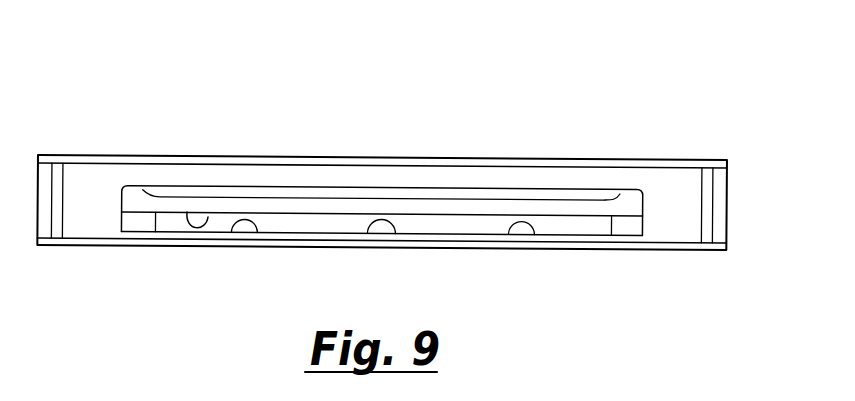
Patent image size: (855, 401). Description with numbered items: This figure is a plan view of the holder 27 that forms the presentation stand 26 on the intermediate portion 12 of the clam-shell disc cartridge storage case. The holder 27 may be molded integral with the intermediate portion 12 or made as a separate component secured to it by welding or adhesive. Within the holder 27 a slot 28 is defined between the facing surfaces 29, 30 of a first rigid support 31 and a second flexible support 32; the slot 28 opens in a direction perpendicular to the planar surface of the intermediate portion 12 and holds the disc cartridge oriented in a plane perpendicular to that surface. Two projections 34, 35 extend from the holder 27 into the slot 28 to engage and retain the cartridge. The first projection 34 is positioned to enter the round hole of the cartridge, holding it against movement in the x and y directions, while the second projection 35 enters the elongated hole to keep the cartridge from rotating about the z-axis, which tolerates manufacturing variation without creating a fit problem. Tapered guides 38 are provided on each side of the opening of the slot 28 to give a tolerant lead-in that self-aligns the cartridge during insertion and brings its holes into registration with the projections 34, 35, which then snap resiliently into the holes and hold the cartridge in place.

The intermediate portion 12 is at (665, 180).
The presentation stand 26 is at (431, 167).
The holder 27 is at (620, 194).
The slot 28 is at (437, 222).
The facing surface 29 is at (187, 212).
The facing surface 30 is at (377, 228).
The first rigid support 31 is at (388, 203).
The second flexible support 32 is at (150, 233).
The projection 34 is at (245, 228).
The projection 35 is at (517, 228).
The tapered guides 38 is at (627, 227).